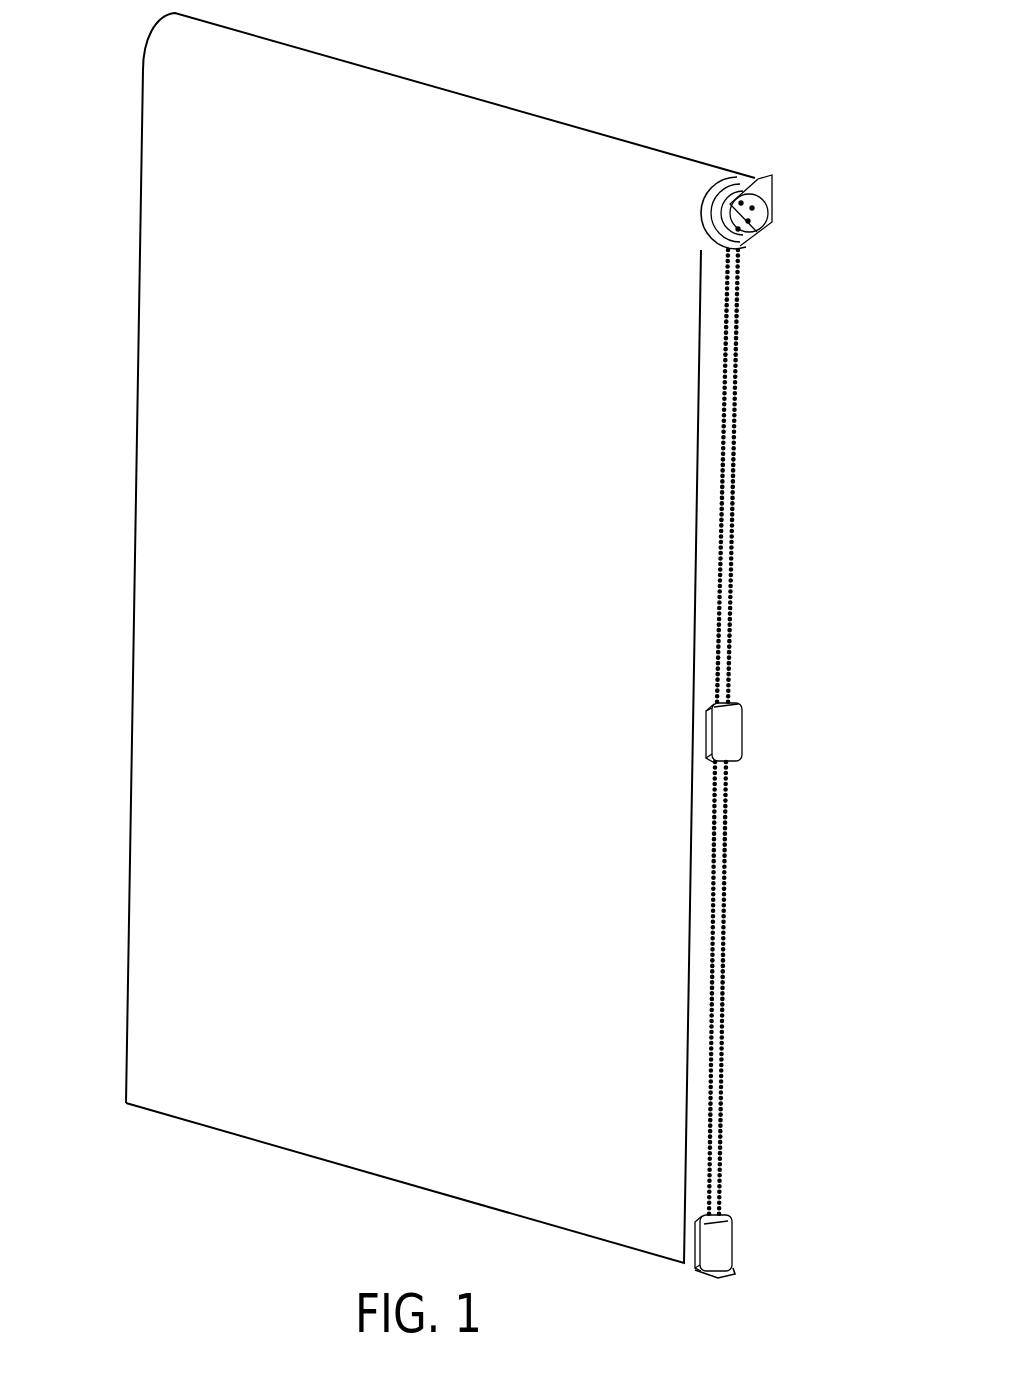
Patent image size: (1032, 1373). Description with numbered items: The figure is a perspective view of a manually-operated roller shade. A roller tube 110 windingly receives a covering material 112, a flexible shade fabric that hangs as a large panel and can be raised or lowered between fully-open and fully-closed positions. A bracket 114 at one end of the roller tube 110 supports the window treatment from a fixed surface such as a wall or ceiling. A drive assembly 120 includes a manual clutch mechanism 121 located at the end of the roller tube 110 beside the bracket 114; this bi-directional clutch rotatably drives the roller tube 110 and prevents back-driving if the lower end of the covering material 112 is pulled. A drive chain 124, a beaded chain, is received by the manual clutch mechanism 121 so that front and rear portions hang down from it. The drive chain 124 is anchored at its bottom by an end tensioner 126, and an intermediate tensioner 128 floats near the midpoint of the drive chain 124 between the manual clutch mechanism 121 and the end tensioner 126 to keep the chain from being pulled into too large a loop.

The roller tube 110 is at (472, 645).
The covering material 112 is at (427, 518).
The bracket 114 is at (760, 208).
The manual clutch mechanism 121 is at (755, 225).
The drive assembly 120 is at (787, 764).
The drive chain 124 is at (737, 468).
The intermediate tensioner 128 is at (724, 733).
The end tensioner 126 is at (724, 1243).